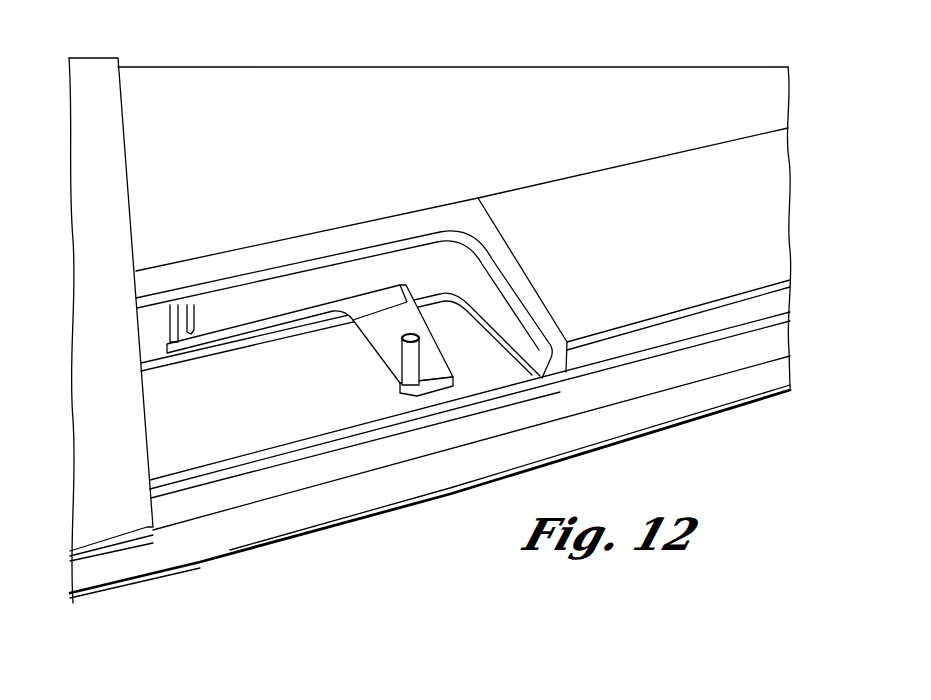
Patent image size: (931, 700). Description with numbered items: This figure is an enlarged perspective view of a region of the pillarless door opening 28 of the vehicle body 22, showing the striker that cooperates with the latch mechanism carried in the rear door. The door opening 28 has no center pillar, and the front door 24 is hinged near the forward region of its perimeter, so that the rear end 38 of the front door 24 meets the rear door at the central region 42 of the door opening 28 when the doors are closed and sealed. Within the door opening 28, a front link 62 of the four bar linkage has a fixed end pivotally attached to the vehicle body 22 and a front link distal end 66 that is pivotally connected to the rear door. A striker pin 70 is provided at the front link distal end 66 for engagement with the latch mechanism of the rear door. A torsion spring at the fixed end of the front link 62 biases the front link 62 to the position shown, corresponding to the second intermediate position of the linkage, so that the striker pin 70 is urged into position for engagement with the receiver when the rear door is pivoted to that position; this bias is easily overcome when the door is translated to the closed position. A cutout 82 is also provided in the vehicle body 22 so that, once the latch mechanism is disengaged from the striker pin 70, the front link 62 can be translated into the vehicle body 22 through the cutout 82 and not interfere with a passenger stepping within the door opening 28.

The vehicle body 22 is at (327, 530).
The front door 24 is at (121, 541).
The door opening 28 is at (656, 237).
The rear end of the front door 38 is at (93, 552).
The central region of the door opening 42 is at (134, 33).
The front link 62 is at (374, 353).
The front link distal end 66 is at (438, 388).
The striker pin 70 is at (412, 372).
The cutout 82 is at (236, 328).